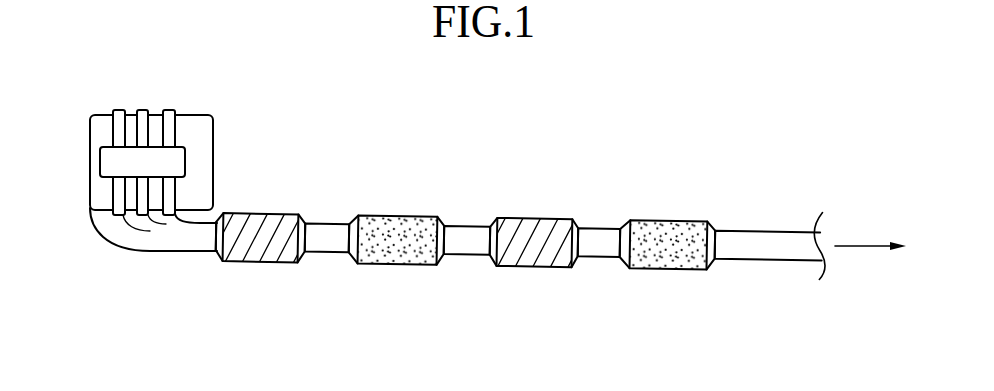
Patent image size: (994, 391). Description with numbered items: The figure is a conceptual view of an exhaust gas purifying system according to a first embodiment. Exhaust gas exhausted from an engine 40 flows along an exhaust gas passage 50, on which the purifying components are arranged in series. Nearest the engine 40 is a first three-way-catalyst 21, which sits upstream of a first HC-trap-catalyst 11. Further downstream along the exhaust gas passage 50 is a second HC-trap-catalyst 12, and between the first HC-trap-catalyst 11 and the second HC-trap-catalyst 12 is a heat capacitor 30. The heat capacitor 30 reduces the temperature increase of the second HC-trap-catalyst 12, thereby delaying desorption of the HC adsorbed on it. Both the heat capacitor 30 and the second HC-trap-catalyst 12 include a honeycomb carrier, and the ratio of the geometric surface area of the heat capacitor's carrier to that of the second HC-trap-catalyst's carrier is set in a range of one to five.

The engine 40 is at (198, 115).
The first three-way-catalyst 21 is at (255, 262).
The first HC-trap-catalyst 11 is at (400, 263).
The heat capacitor 30 is at (528, 267).
The second HC-trap-catalyst 12 is at (663, 270).
The exhaust gas passage 50 is at (772, 232).